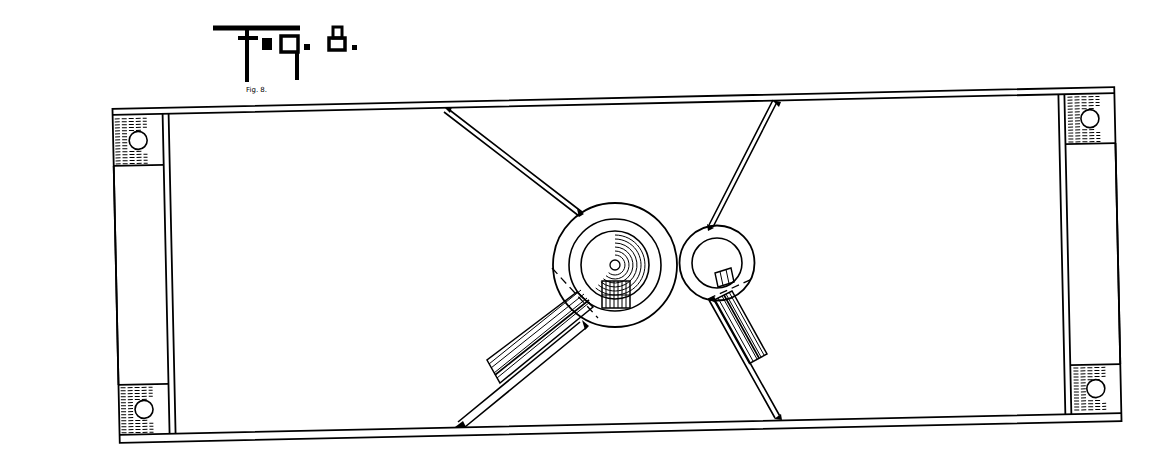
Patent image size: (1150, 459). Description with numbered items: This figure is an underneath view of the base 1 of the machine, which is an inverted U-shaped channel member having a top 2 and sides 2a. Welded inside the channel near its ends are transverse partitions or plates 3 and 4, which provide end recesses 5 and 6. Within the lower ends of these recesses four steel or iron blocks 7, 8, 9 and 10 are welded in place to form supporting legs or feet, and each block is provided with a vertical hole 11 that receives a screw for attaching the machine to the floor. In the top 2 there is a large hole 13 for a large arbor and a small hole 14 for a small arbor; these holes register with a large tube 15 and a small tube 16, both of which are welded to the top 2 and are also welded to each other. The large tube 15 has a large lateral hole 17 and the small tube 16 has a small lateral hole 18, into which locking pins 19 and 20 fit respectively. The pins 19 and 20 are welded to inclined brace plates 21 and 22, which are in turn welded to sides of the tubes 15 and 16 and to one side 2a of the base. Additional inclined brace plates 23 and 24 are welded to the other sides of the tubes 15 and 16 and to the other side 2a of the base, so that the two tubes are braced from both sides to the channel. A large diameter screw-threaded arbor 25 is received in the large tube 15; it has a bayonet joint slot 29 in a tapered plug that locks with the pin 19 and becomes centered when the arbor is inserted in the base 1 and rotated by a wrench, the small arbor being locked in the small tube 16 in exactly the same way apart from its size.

The base 1 is at (174, 89).
The top 2 is at (321, 223).
The sides 2a is at (907, 94).
The transverse partition or plate 3 is at (170, 279).
The transverse partition or plate 4 is at (1061, 233).
The end recess 5 is at (148, 323).
The end recess 6 is at (1097, 300).
The block 7 is at (133, 388).
The block 8 is at (130, 168).
The block 9 is at (1107, 366).
The block 10 is at (1101, 138).
The vertical hole 11 is at (127, 134).
The large hole 13 is at (598, 210).
The small hole 14 is at (728, 230).
The large tube 15 is at (568, 232).
The small tube 16 is at (748, 246).
The large lateral hole 17 is at (553, 268).
The small lateral hole 18 is at (748, 272).
The locking pin 19 is at (538, 332).
The locking pin 20 is at (758, 322).
The inclined brace plate 21 is at (487, 398).
The inclined brace plate 22 is at (765, 390).
The inclined brace plate 23 is at (497, 151).
The inclined brace plate 24 is at (755, 149).
The large diameter screw-threaded arbor 25 is at (620, 240).
The bayonet joint slot 29 is at (622, 308).